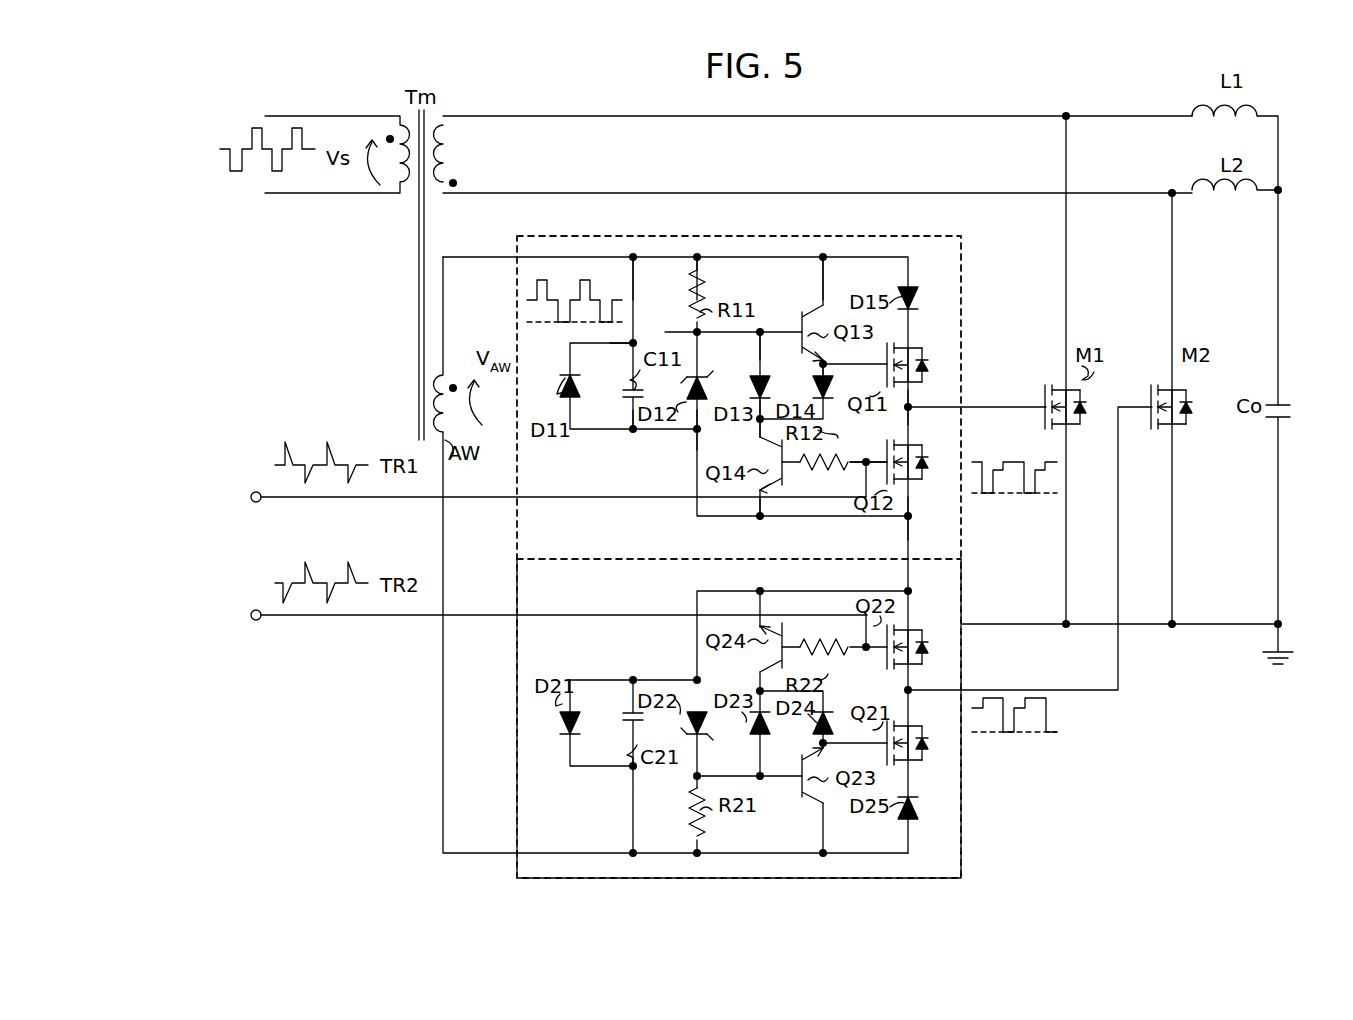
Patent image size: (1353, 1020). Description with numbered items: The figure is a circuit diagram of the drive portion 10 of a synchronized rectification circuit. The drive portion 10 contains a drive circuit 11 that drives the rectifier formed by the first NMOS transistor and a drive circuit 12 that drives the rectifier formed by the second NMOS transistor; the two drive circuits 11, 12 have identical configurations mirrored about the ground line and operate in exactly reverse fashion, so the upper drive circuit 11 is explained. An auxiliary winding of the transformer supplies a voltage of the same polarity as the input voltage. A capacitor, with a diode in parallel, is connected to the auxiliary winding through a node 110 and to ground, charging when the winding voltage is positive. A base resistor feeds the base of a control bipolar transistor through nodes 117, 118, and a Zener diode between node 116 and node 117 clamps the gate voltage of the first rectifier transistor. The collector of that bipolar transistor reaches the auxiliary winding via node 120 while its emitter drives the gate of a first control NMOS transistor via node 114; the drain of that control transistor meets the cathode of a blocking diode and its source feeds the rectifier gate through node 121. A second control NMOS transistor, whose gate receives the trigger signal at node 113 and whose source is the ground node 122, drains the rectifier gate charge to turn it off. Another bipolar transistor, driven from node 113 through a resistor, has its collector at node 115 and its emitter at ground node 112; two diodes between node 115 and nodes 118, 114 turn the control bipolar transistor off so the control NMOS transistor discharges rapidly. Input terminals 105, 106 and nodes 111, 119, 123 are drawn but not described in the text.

The drive portion 10 is at (736, 888).
The drive circuit 11 is at (963, 312).
The drive circuit 12 is at (963, 808).
The first trigger input terminal 105 is at (248, 497).
The second trigger input terminal 106 is at (248, 615).
The node 110 is at (636, 261).
The node 111 is at (630, 433).
The node 112 is at (757, 520).
The node 113 is at (866, 458).
The node 114 is at (820, 367).
The node 115 is at (757, 423).
The node 116 is at (694, 433).
The node 117 is at (693, 332).
The node 118 is at (762, 328).
The node 119 is at (700, 261).
The node 120 is at (826, 261).
The node 121 is at (912, 411).
The node 122 is at (905, 520).
The node 123 is at (630, 347).